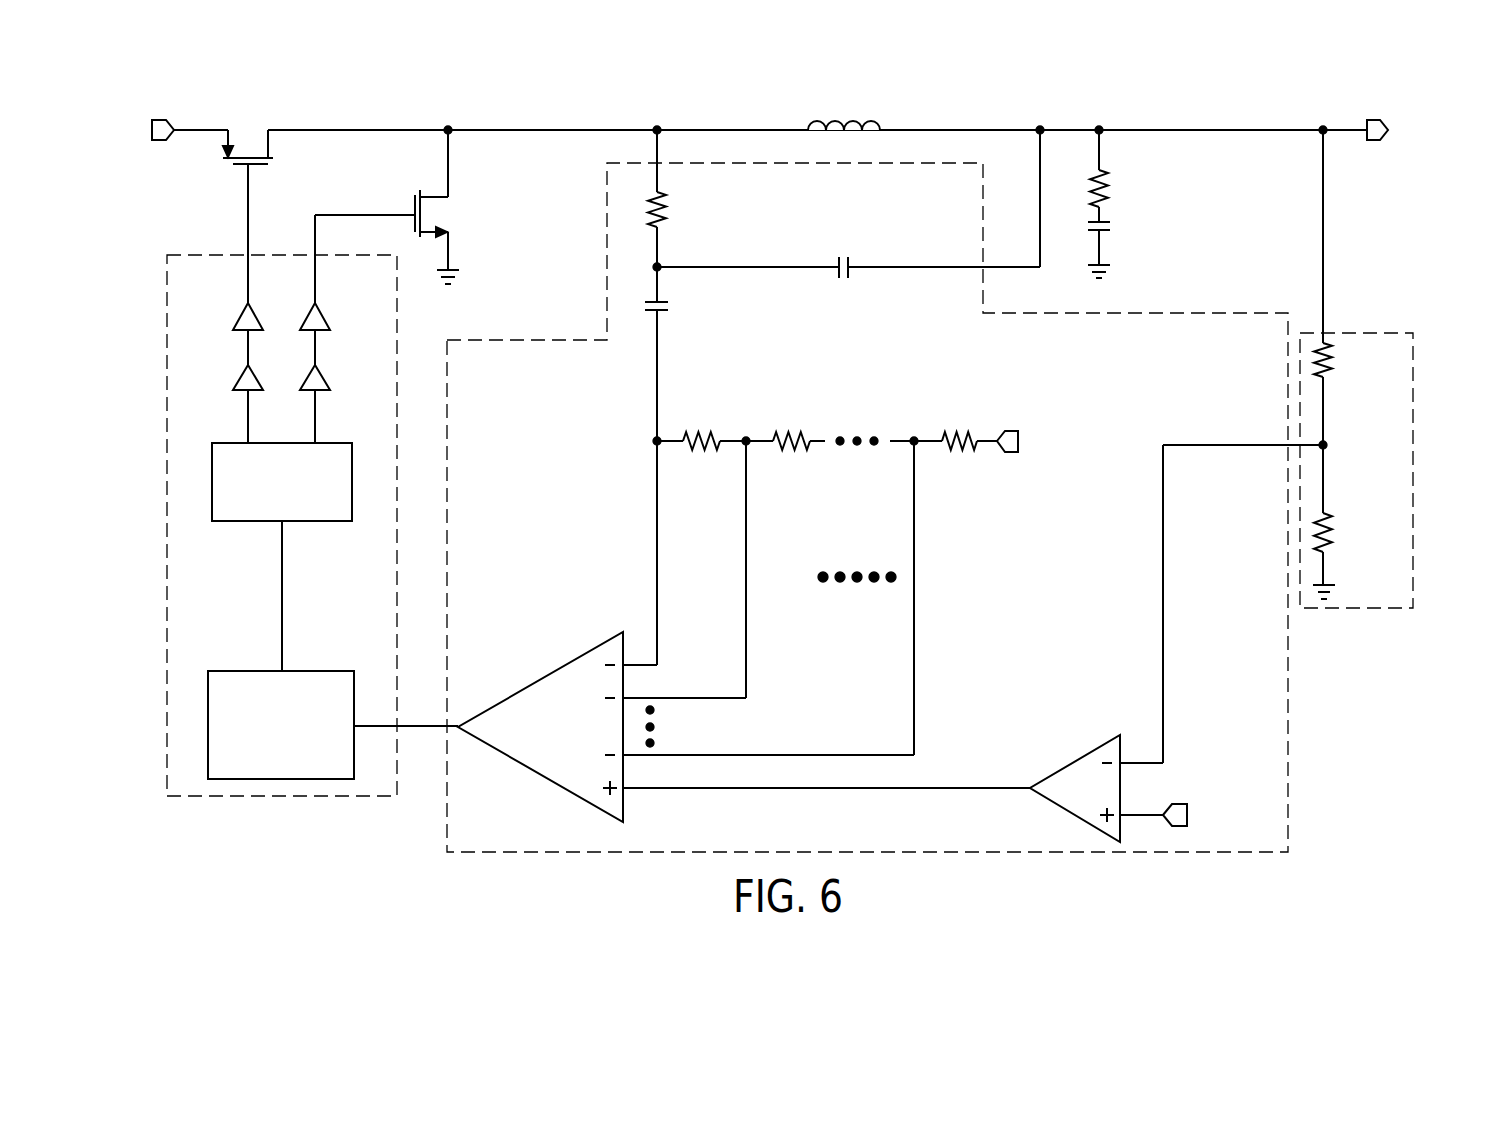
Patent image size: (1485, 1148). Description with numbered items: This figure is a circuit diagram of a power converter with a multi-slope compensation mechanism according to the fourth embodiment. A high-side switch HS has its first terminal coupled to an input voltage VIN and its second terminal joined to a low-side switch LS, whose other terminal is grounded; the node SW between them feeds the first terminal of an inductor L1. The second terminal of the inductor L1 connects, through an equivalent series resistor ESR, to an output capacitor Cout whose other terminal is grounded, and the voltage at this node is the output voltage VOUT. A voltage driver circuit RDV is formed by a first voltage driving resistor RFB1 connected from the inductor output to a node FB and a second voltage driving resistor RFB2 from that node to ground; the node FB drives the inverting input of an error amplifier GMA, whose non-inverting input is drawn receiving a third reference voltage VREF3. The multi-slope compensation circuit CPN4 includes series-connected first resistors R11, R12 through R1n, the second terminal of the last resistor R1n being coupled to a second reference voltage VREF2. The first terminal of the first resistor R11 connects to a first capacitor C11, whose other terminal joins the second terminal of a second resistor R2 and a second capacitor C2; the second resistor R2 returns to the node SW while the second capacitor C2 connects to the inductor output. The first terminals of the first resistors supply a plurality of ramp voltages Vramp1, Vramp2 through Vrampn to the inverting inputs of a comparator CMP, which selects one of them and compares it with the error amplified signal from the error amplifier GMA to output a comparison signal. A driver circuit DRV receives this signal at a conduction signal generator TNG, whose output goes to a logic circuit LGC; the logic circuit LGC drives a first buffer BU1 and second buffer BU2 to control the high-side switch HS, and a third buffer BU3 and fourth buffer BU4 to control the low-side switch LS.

The input voltage VIN is at (137, 130).
The high-side switch HS is at (248, 200).
The node SW is at (451, 114).
The low-side switch LS is at (400, 207).
The inductor L1 is at (844, 108).
The output voltage VOUT is at (1393, 130).
The equivalent series resistor ESR is at (1127, 174).
The output capacitor Cout is at (1124, 250).
The second resistor R2 is at (676, 196).
The second capacitor C2 is at (848, 202).
The first capacitor C11 is at (681, 354).
The driver circuit DRV is at (259, 796).
The first buffer BU1 is at (238, 373).
The second buffer BU2 is at (238, 312).
The third buffer BU3 is at (325, 373).
The fourth buffer BU4 is at (325, 312).
The logic circuit LGC is at (230, 521).
The conduction signal generator TNG is at (330, 671).
The multi-slope compensation circuit CPN4 is at (1288, 730).
The comparator CMP is at (540, 678).
The first resistor R11 is at (699, 424).
The first resistor R12 is at (783, 424).
The first resistor R1n is at (943, 424).
The second reference voltage VREF2 is at (1053, 441).
The ramp voltage Vramp1 is at (675, 553).
The ramp voltage Vramp2 is at (720, 569).
The ramp voltage Vrampn is at (804, 598).
The error amplifier GMA is at (1073, 760).
The third reference voltage VREF3 is at (1198, 814).
The voltage driver circuit RDV is at (1357, 335).
The first voltage driving resistor RFB1 is at (1359, 287).
The node FB is at (1265, 447).
The second voltage driving resistor RFB2 is at (1360, 522).